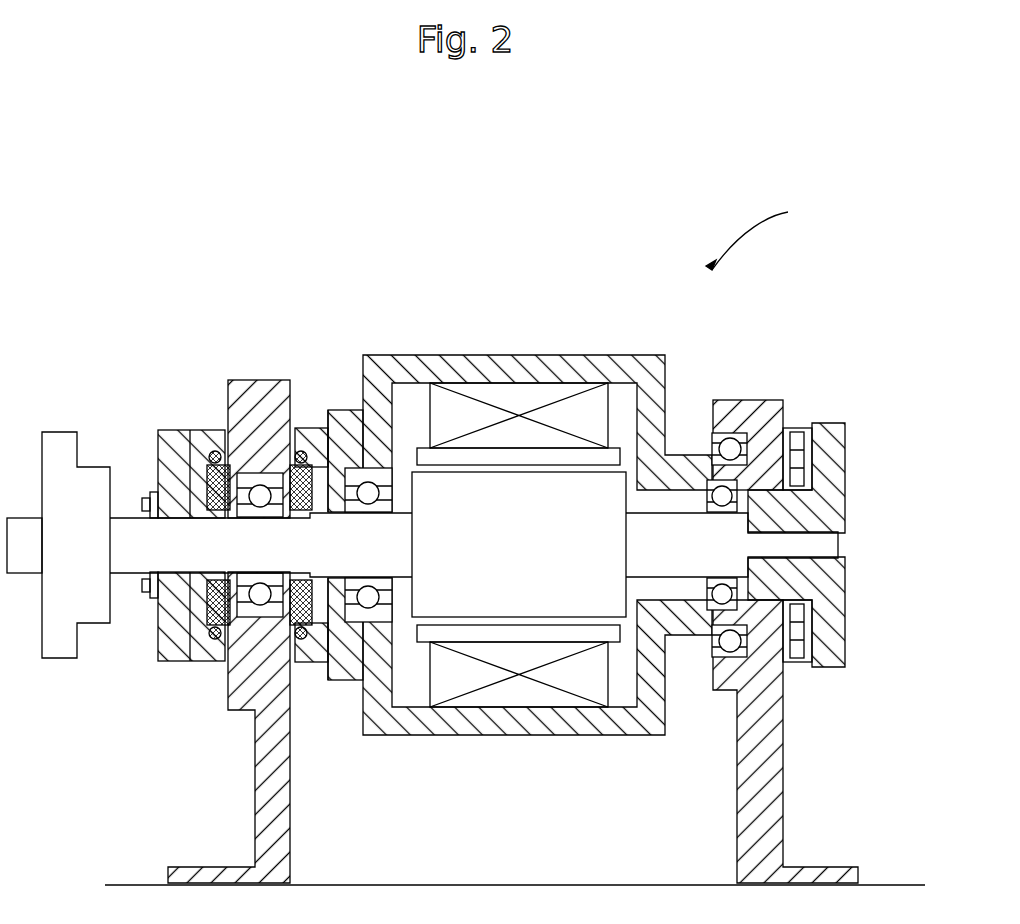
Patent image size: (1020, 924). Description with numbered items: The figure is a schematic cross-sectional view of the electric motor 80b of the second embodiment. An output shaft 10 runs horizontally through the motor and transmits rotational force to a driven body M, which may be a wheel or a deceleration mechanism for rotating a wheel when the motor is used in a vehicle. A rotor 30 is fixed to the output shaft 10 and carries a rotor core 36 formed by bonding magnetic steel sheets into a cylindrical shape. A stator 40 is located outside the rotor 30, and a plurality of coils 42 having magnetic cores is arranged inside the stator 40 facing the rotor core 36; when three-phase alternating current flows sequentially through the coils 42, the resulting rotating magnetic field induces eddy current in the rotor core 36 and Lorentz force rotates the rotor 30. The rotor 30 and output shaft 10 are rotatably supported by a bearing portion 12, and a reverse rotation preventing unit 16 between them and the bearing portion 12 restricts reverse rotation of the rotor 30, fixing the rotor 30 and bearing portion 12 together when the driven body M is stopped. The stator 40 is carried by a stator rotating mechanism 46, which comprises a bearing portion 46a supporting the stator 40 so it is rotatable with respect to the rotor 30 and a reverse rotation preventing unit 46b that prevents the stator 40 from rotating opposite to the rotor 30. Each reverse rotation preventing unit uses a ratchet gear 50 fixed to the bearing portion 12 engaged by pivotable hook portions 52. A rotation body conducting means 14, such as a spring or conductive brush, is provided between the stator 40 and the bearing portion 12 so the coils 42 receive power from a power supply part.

The driven body M is at (60, 432).
The output shaft 10 is at (132, 580).
The bearing portion 12 is at (240, 380).
The rotation body conducting means 14 is at (803, 428).
The reverse rotation preventing unit 16 is at (180, 306).
The rotor 30 is at (385, 537).
The rotor core 36 is at (590, 505).
The stator 40 is at (663, 352).
The coils 42 is at (518, 403).
The stator rotating mechanism 46 is at (237, 269).
The bearing portion 46a is at (352, 412).
The reverse rotation preventing unit 46b is at (322, 306).
The ratchet gear 50 is at (248, 592).
The hook portions 52 is at (187, 493).
The electric motor 80b is at (765, 225).